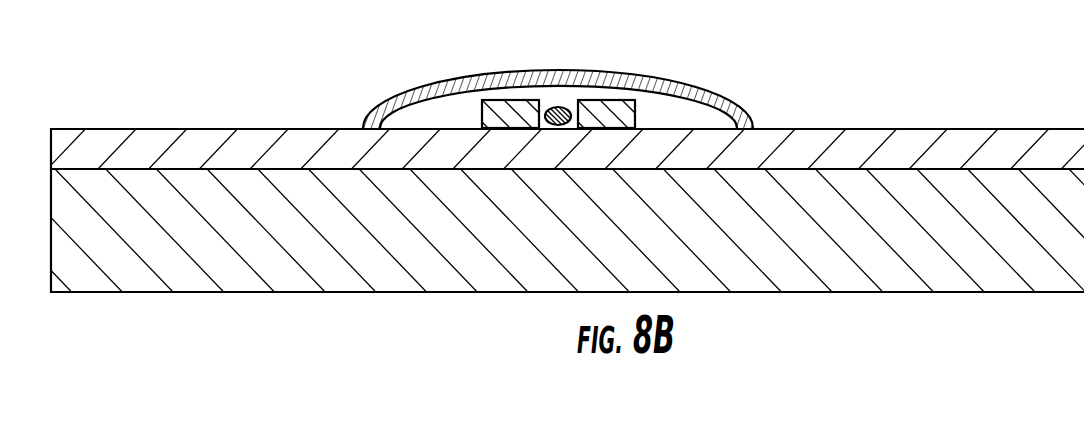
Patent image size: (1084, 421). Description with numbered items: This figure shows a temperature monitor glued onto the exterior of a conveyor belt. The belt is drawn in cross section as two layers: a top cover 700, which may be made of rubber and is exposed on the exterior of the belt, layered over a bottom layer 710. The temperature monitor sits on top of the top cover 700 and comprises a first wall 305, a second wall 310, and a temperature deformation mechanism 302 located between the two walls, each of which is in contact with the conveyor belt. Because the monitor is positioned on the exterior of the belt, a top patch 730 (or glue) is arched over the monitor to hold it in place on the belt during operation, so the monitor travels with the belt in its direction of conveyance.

The top cover 700 is at (965, 148).
The bottom layer 710 is at (950, 292).
The top patch 730 is at (390, 107).
The second wall 310 is at (493, 117).
The first wall 305 is at (627, 117).
The temperature deformation mechanism 302 is at (560, 115).